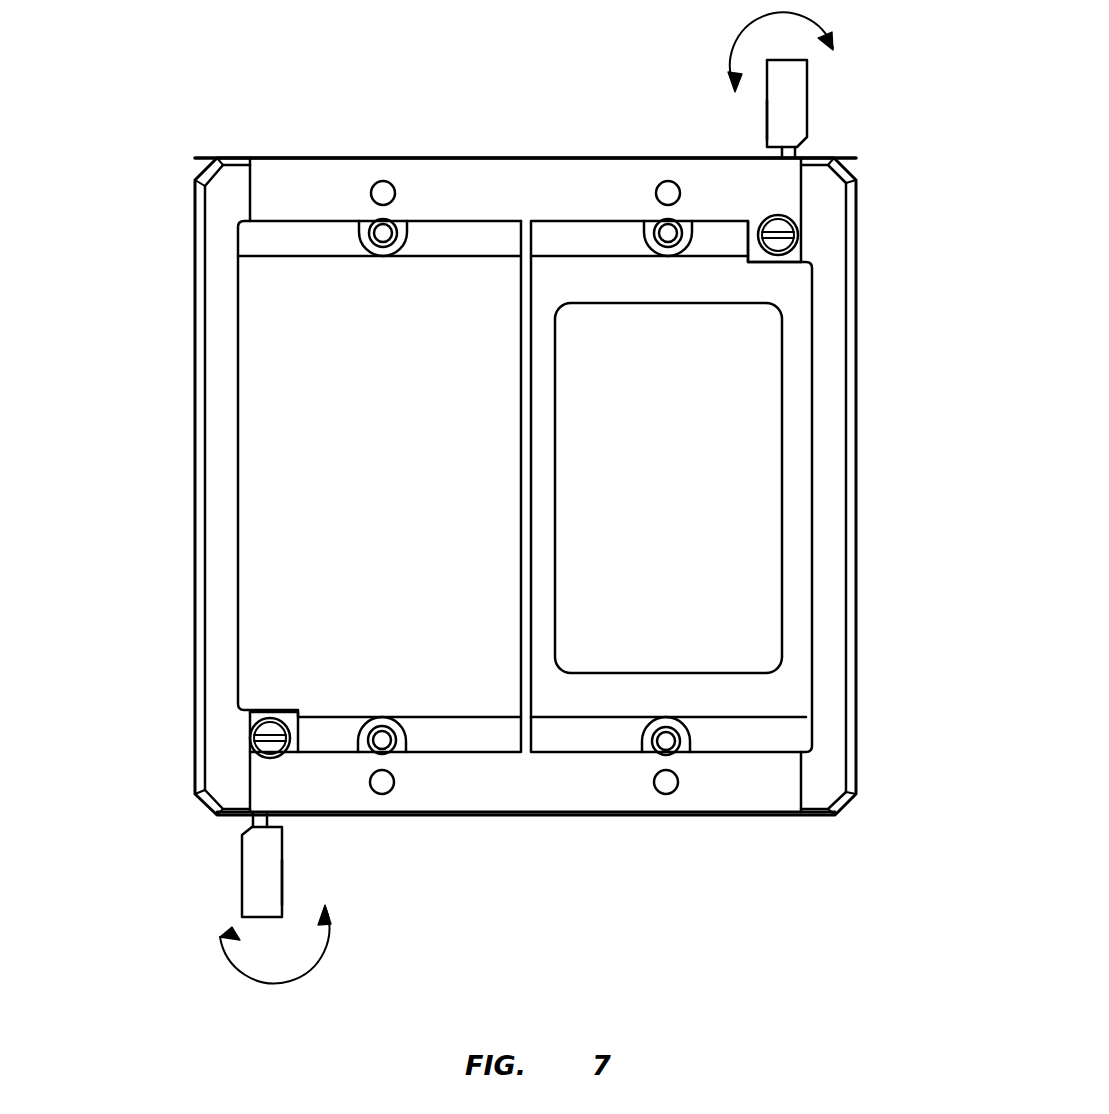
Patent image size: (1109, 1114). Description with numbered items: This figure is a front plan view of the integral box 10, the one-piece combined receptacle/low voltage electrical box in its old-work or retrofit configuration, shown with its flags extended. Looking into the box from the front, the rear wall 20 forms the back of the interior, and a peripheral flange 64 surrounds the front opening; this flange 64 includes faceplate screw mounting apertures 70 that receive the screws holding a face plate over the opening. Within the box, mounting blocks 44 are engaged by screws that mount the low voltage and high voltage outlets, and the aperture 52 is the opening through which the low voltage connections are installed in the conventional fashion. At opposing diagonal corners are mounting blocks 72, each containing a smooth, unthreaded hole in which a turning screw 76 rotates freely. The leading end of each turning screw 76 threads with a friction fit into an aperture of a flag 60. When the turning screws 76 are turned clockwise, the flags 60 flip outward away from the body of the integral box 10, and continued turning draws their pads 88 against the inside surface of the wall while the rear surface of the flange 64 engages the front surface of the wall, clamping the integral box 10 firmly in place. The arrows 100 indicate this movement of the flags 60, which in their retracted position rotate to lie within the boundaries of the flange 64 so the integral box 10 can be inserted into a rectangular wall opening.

The integral box 10 is at (140, 557).
The rear wall 20 is at (390, 492).
The mounting blocks 44 is at (390, 230).
The aperture 52 is at (728, 442).
The flags 60 is at (829, 71).
The peripheral flange 64 is at (223, 357).
The faceplate screw mounting apertures 70 is at (383, 193).
The mounting blocks 72 is at (785, 258).
The turning screws 76 is at (782, 232).
The pads 88 is at (795, 122).
The arrows 100 is at (745, 36).